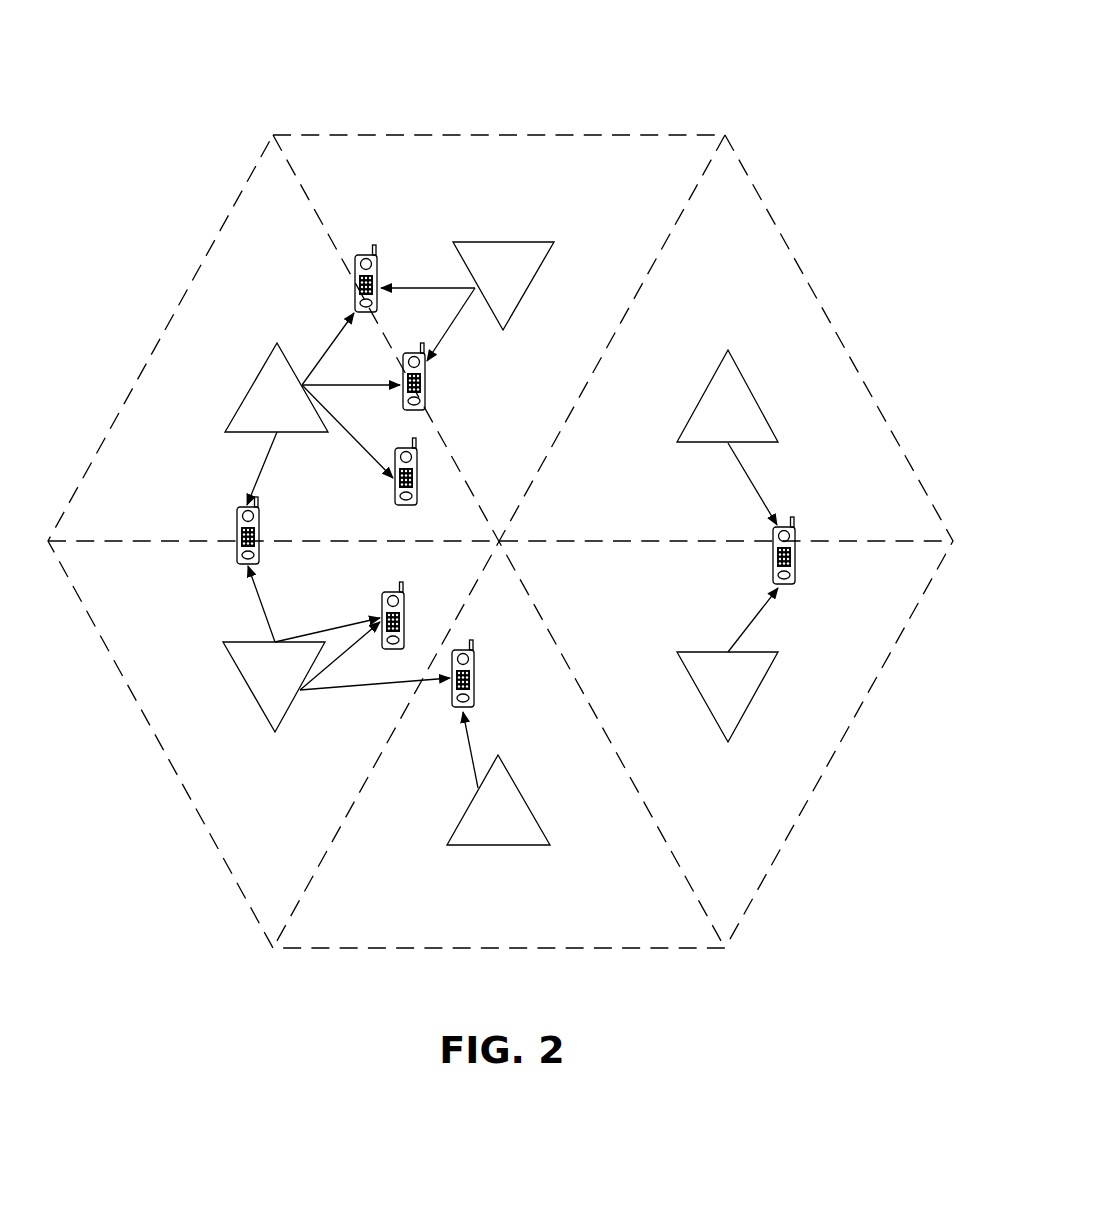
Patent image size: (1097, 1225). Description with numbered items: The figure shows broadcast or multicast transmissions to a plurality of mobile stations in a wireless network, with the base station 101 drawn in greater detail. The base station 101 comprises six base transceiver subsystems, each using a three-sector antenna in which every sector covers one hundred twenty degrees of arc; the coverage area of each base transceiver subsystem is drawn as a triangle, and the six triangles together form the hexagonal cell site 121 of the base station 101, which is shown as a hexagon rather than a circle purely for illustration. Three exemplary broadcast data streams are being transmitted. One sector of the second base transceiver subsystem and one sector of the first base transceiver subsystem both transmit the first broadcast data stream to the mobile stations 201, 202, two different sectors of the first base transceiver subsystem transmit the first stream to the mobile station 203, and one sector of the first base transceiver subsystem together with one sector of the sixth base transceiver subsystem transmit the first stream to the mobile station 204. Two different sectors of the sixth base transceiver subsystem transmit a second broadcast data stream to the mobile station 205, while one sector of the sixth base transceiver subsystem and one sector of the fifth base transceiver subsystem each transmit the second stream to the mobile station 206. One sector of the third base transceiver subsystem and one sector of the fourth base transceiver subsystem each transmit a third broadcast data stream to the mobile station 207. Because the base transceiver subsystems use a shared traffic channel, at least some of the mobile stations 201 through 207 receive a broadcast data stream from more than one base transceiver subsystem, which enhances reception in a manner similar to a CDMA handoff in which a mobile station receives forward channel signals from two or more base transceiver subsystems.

The base station 101 is at (668, 73).
The cell site 121 is at (455, 133).
The mobile station 201 is at (355, 290).
The mobile station 202 is at (426, 390).
The mobile station 203 is at (395, 494).
The mobile station 204 is at (237, 515).
The mobile station 205 is at (382, 602).
The mobile station 206 is at (475, 683).
The mobile station 207 is at (797, 565).